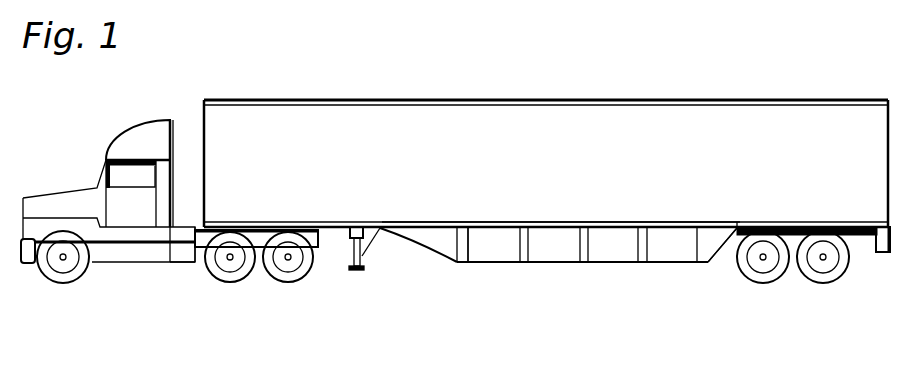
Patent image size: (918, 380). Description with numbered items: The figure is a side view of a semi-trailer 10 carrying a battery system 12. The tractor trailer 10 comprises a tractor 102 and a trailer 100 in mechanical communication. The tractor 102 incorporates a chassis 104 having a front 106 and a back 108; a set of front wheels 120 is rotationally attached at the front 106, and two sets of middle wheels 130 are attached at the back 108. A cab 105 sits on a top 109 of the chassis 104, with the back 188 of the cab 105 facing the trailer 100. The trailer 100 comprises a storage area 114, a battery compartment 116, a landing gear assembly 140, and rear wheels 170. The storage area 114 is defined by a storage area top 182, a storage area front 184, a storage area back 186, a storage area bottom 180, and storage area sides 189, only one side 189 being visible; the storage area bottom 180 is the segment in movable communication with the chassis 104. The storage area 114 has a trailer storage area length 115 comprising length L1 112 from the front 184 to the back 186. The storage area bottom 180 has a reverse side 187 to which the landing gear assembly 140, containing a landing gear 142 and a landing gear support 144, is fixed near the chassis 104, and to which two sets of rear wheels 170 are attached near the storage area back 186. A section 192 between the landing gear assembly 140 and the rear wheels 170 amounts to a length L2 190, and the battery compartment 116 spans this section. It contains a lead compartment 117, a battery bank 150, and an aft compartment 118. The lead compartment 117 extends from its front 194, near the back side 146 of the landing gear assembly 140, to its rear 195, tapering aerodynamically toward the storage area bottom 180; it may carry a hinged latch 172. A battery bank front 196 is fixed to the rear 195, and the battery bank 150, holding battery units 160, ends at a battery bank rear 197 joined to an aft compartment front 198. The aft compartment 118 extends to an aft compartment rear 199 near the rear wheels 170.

The semi-trailer 10 is at (333, 80).
The battery system 12 is at (569, 268).
The trailer 100 is at (263, 138).
The tractor 102 is at (48, 196).
The chassis 104 is at (195, 250).
The cab 105 is at (130, 143).
The front 106 is at (17, 258).
The back 108 is at (318, 250).
The top 109 is at (172, 236).
The length L1 112 is at (546, 50).
The storage area 114 is at (393, 145).
The trailer storage area length 115 is at (889, 98).
The battery compartment 116 is at (543, 258).
The lead compartment 117 is at (435, 245).
The aft compartment 118 is at (767, 283).
The front wheels 120 is at (64, 285).
The middle wheels 130 is at (240, 268).
The landing gear assembly 140 is at (357, 269).
The landing gear 142 is at (352, 259).
The landing gear support 144 is at (366, 239).
The back side 146 is at (362, 267).
The battery bank 150 is at (498, 250).
The battery units 160 is at (670, 285).
The rear wheels 170 is at (795, 279).
The hinged latch 172 is at (457, 268).
The storage area bottom 180 is at (888, 256).
The storage area top 182 is at (481, 98).
The storage area front 184 is at (190, 126).
The storage area back 186 is at (896, 130).
The reverse side 187 is at (860, 238).
The back of the cab 188 is at (178, 170).
The storage area sides 189 is at (750, 125).
The length L2 190 is at (740, 222).
The section 192 is at (748, 215).
The front of the lead compartment 194 is at (382, 228).
The rear of the lead compartment 195 is at (478, 285).
The battery bank front 196 is at (472, 268).
The battery bank rear 197 is at (771, 191).
The aft compartment front 198 is at (739, 214).
The aft compartment rear 199 is at (742, 222).